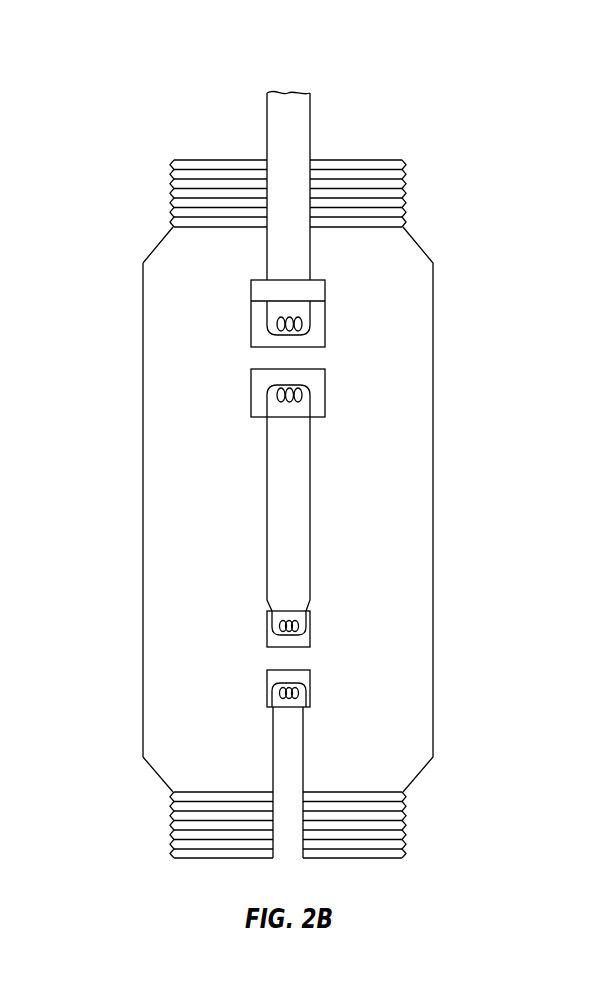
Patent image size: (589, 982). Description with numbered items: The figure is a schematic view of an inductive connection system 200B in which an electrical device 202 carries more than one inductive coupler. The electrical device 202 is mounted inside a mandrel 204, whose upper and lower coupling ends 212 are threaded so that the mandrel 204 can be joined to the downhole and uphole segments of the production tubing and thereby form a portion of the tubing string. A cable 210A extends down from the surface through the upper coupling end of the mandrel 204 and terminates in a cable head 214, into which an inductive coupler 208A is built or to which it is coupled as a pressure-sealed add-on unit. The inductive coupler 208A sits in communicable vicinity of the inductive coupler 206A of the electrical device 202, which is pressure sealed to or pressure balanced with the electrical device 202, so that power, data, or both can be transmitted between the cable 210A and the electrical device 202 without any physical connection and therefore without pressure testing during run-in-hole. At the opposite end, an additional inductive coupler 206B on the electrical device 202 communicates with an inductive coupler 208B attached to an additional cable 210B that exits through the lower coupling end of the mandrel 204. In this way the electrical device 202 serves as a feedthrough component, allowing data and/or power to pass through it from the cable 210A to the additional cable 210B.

The inductive connection system 200B is at (460, 110).
The electrical device 202 is at (292, 513).
The mandrel 204 is at (415, 372).
The inductive coupler 206A is at (315, 400).
The additional inductive coupler 206B is at (313, 630).
The inductive coupler 208A is at (315, 318).
The inductive coupler 208B is at (313, 690).
The cable 210A is at (300, 266).
The additional cable 210B is at (303, 757).
The coupling ends 212 is at (172, 193).
The cable head 214 is at (250, 291).